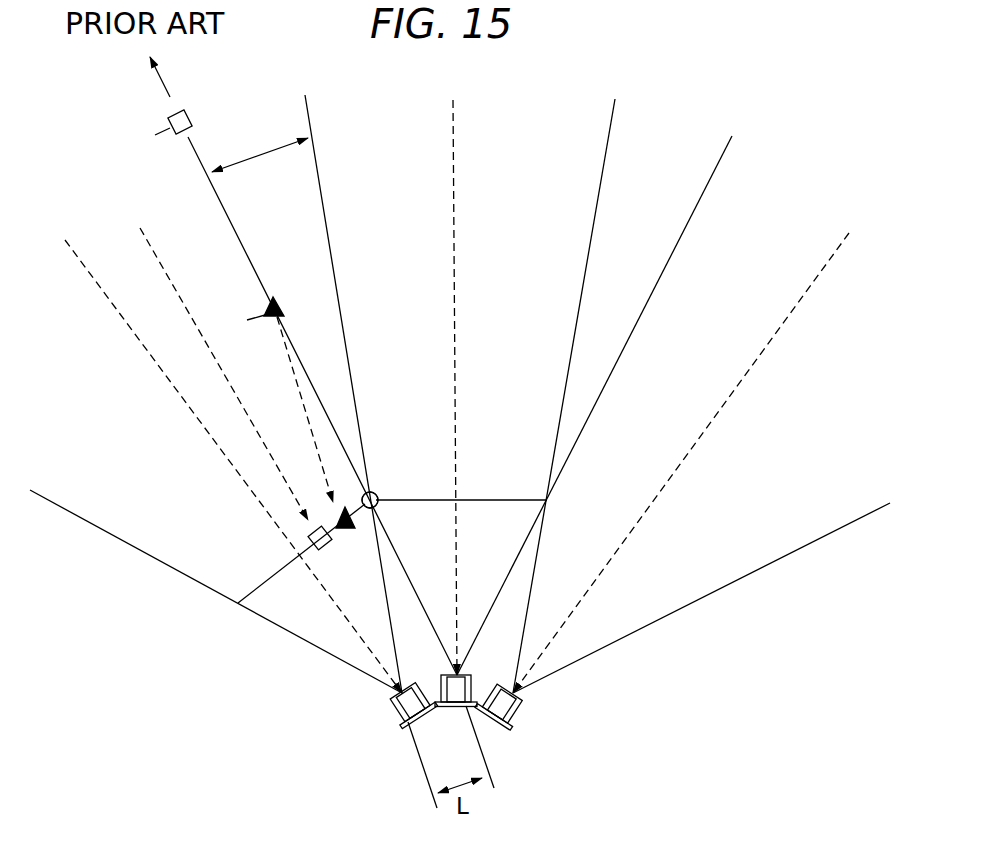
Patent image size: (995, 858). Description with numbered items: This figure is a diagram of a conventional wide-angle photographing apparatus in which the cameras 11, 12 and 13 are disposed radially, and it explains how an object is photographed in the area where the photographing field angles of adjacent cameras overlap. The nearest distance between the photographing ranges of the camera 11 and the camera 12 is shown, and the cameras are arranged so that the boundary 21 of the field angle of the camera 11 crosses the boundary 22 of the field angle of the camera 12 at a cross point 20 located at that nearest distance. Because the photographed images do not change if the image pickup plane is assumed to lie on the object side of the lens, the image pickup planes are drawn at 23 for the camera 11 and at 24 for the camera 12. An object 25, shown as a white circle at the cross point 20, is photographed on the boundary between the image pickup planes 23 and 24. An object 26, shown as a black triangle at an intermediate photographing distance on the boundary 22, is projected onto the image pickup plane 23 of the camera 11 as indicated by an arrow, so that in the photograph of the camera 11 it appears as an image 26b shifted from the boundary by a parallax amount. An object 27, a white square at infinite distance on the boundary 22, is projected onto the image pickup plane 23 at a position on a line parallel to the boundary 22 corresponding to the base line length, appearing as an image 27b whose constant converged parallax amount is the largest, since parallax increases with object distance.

The camera 11 is at (400, 723).
The camera 12 is at (455, 707).
The third image sensor 13 is at (518, 715).
The cross point 20 is at (378, 498).
The boundary of the photographing field angle 21 is at (320, 197).
The boundary of the photographing field angle 22 is at (220, 200).
The image pickup plane 23 is at (272, 570).
The image pickup plane 24 is at (484, 499).
The object 25 is at (372, 492).
The object 26 is at (280, 306).
The object 27 is at (192, 115).
The image 26b is at (345, 528).
The image 27b is at (322, 550).